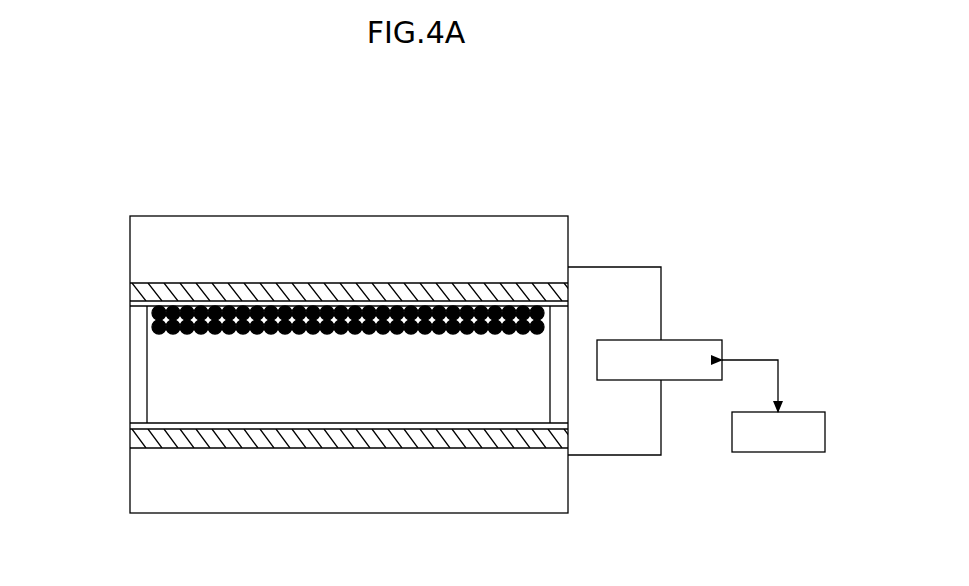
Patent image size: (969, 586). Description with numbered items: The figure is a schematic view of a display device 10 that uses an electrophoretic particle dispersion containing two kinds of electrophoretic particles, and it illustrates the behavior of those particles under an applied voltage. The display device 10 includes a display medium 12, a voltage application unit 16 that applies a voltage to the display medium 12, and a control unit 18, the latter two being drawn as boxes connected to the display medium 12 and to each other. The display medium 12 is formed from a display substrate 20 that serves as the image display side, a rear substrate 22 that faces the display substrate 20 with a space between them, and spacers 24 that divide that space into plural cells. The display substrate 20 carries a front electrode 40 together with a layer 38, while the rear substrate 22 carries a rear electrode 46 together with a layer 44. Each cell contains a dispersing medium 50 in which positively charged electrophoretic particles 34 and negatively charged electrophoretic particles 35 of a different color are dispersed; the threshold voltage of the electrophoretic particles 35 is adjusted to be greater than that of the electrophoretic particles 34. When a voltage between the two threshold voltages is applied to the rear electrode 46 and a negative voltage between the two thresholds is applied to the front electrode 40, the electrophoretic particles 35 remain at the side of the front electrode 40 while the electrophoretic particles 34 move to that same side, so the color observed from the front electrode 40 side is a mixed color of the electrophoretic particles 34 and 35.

The display device 10 is at (453, 150).
The display medium 12 is at (519, 214).
The voltage application unit 16 is at (697, 340).
The control unit 18 is at (778, 452).
The display substrate 20 is at (70, 222).
The rear substrate 22 is at (70, 447).
The spacers 24 is at (141, 368).
The electrophoretic particles 34 is at (290, 305).
The electrophoretic particles 35 is at (155, 335).
The first base substrate 38 is at (141, 240).
The front electrode 40 is at (136, 286).
The second base substrate 44 is at (146, 492).
The rear electrode 46 is at (136, 445).
The dispersing medium 50 is at (548, 400).